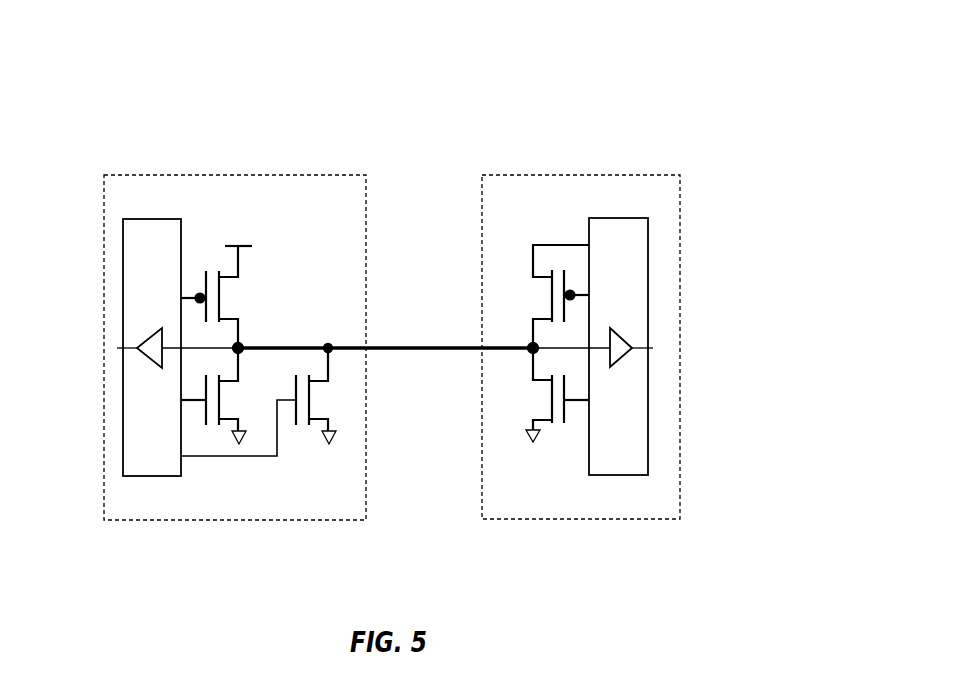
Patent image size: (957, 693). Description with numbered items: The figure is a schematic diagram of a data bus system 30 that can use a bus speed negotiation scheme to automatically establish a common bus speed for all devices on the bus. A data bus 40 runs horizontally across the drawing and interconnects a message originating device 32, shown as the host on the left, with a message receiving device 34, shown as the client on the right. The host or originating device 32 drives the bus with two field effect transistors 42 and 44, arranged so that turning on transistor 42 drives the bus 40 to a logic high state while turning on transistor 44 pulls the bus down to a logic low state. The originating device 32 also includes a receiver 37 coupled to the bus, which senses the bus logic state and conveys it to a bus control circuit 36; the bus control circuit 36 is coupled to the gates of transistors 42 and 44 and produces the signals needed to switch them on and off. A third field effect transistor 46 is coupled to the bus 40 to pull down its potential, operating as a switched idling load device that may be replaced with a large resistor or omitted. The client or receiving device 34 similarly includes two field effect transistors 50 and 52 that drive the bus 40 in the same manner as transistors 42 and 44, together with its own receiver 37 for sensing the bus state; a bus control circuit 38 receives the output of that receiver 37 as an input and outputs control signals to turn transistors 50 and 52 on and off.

The bus interface system 30 is at (764, 178).
The message originating device 32 is at (248, 175).
The message receiving device 34 is at (661, 175).
The bus control circuit 36 is at (152, 219).
The receiver 37 is at (147, 340).
The bus control circuit 38 is at (648, 258).
The data bus 40 is at (440, 347).
The field effect transistor 42 is at (230, 300).
The field effect transistor 44 is at (233, 406).
The third field effect transistor 46 is at (316, 406).
The field effect transistor 50 is at (545, 293).
The field effect transistor 52 is at (545, 404).